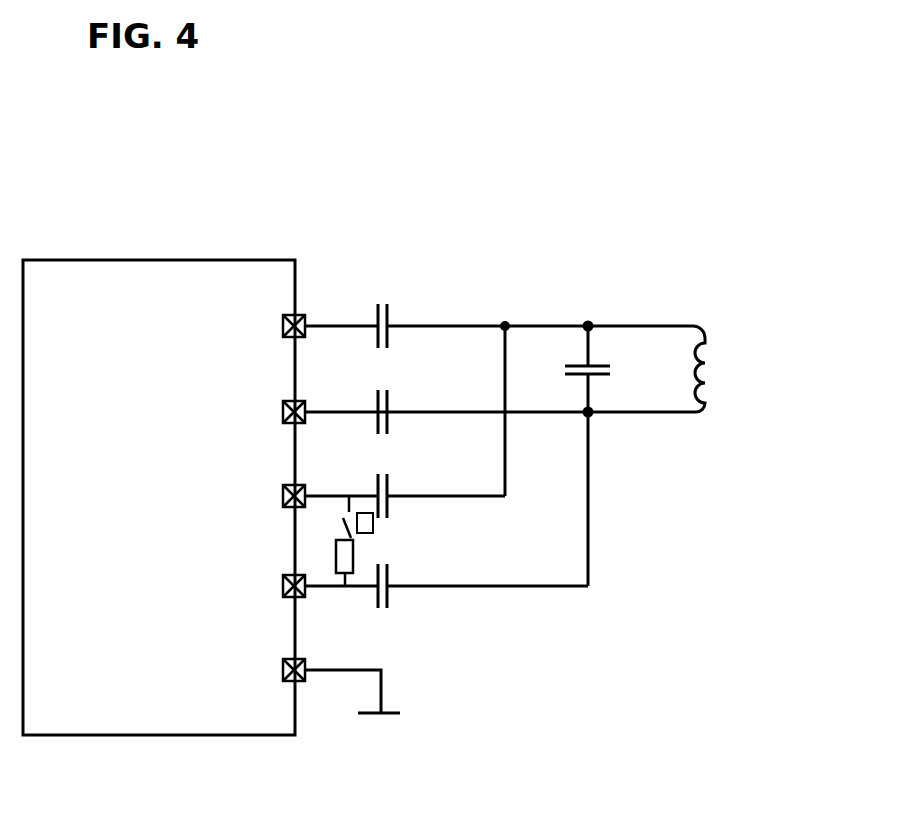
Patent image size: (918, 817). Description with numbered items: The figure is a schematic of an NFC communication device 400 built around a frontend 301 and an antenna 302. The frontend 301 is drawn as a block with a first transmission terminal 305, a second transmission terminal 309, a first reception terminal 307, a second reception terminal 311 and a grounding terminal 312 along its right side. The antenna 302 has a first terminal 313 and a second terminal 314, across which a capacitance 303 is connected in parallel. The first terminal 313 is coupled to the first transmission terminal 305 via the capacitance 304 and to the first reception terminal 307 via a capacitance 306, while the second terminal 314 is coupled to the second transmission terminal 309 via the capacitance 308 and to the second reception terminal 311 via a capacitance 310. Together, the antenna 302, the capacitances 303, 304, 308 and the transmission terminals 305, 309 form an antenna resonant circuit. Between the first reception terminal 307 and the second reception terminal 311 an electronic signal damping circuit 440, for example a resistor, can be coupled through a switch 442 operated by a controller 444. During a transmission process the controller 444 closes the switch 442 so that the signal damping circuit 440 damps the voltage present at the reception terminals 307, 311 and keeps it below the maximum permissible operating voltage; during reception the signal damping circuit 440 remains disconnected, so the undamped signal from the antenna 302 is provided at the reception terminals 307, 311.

The frontend 301 is at (188, 259).
The antenna 302 is at (707, 336).
The capacitance 303 is at (579, 365).
The capacitance 304 is at (378, 303).
The first transmission terminal 305 is at (285, 315).
The capacitance 306 is at (378, 481).
The first reception terminal 307 is at (285, 485).
The capacitance 308 is at (378, 408).
The second transmission terminal 309 is at (285, 400).
The capacitance 310 is at (395, 592).
The second reception terminal 311 is at (282, 592).
The grounding terminal 312 is at (282, 677).
The first terminal 313 is at (590, 320).
The second terminal 314 is at (591, 418).
The NFC communication device 400 is at (672, 183).
The electronic signal damping circuit 440 is at (336, 574).
The switch 442 is at (345, 522).
The controller 444 is at (374, 525).